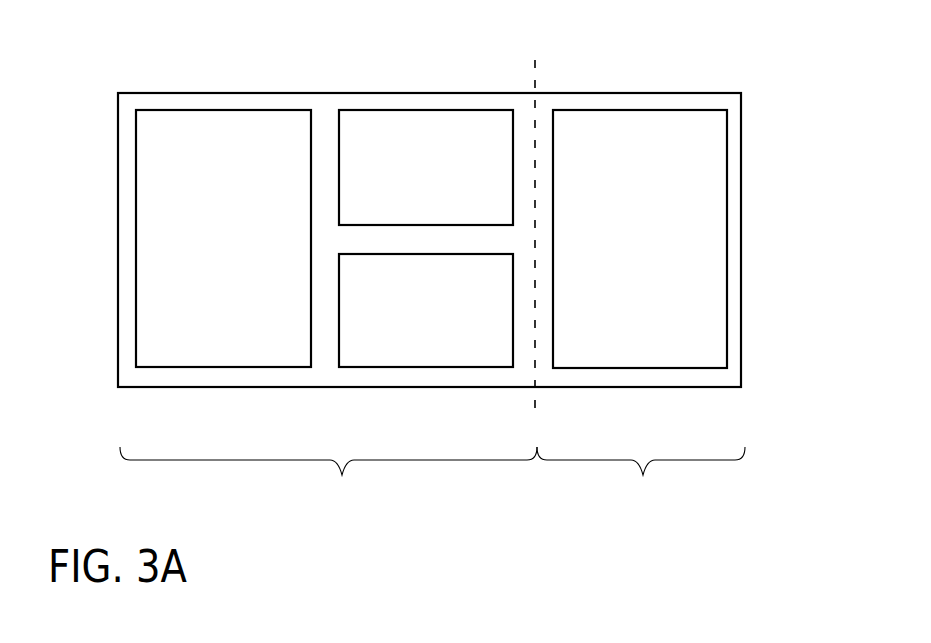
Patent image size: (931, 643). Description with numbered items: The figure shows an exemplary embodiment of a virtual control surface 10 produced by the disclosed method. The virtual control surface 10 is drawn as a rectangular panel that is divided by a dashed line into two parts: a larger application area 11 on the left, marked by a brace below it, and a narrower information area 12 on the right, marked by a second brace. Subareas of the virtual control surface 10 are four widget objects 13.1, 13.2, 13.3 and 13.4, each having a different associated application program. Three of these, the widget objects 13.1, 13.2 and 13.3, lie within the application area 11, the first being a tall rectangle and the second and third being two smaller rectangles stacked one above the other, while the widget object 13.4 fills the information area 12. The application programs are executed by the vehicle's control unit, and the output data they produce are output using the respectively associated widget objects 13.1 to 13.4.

The virtual control surface 10 is at (742, 110).
The application area 11 is at (328, 479).
The information area 12 is at (641, 480).
The widget object 13.1 is at (224, 113).
The widget object 13.2 is at (417, 112).
The widget object 13.3 is at (412, 367).
The widget object 13.4 is at (649, 112).